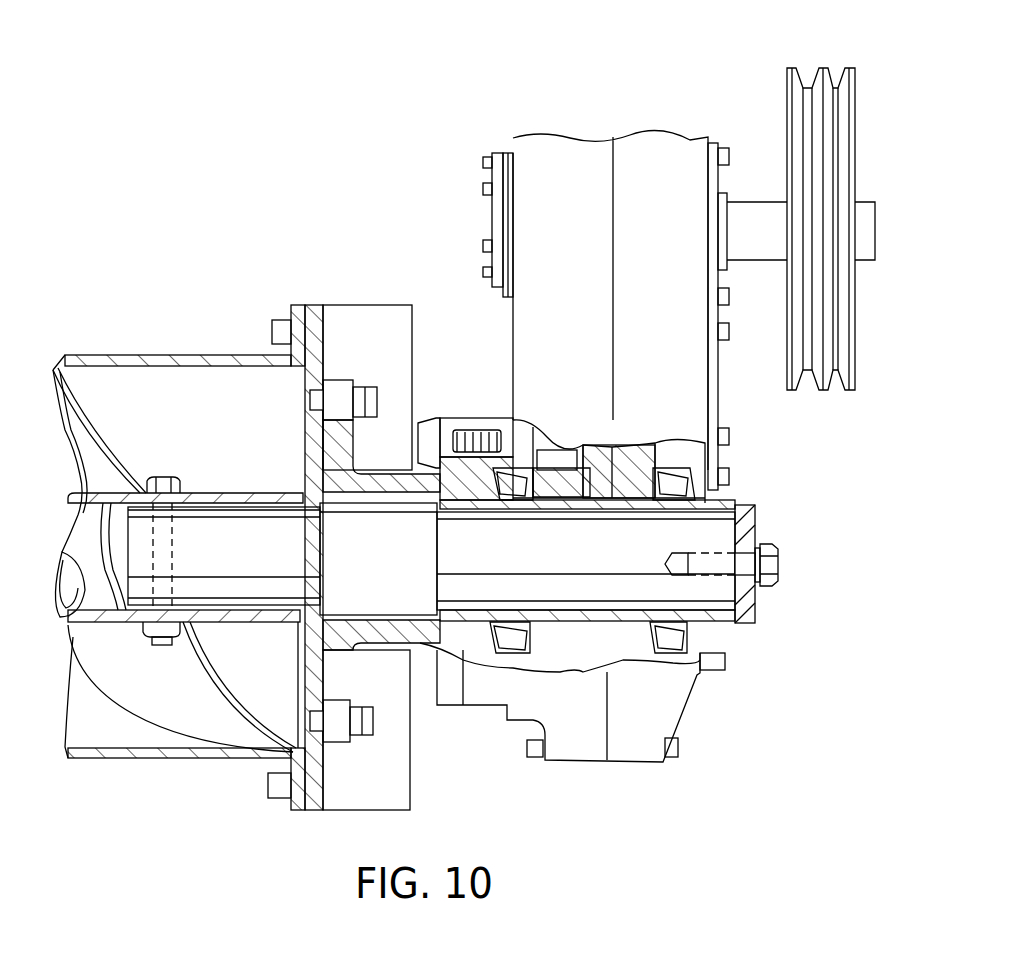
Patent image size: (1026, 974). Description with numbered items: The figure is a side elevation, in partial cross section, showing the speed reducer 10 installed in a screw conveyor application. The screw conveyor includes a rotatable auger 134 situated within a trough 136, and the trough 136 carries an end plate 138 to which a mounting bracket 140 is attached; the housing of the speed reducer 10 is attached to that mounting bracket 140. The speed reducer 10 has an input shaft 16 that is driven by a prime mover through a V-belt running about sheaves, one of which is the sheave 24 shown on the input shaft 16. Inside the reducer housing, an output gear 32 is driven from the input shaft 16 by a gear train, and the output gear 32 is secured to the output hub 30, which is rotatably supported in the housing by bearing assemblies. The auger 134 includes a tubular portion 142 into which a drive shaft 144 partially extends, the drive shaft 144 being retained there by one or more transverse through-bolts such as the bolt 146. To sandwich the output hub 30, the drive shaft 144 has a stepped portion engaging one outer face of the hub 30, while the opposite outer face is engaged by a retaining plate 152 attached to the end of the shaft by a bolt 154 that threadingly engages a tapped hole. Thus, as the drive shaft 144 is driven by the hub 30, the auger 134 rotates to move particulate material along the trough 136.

The speed reducer 10 is at (553, 160).
The input shaft 16 is at (870, 222).
The sheave 24 is at (828, 68).
The output hub 30 is at (563, 485).
The output gear 32 is at (570, 653).
The auger 134 is at (178, 693).
The trough 136 is at (98, 733).
The end plate 138 is at (320, 782).
The mounting bracket 140 is at (453, 418).
The tubular portion 142 is at (228, 495).
The drive shaft 144 is at (248, 563).
The bolt 146 is at (165, 475).
The retaining plate 152 is at (755, 608).
The bolt 154 is at (780, 560).